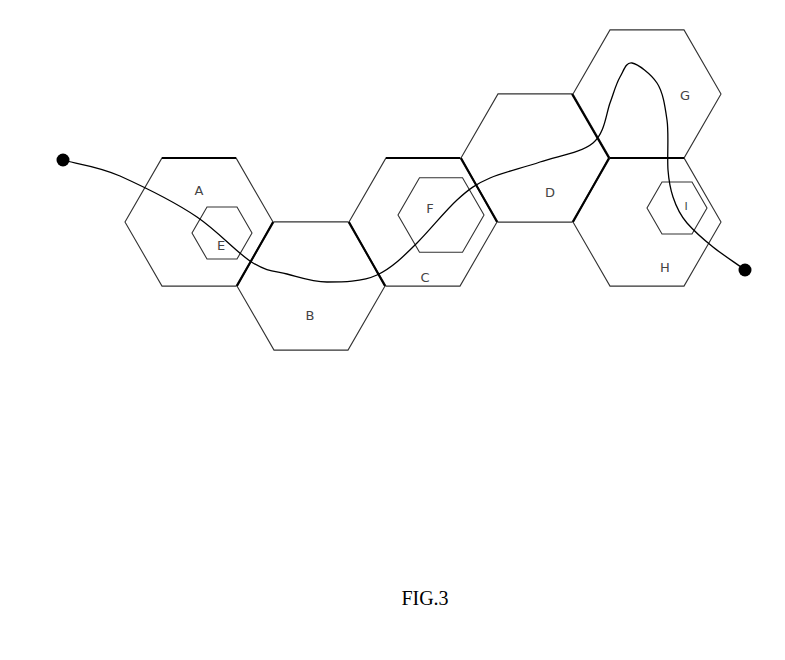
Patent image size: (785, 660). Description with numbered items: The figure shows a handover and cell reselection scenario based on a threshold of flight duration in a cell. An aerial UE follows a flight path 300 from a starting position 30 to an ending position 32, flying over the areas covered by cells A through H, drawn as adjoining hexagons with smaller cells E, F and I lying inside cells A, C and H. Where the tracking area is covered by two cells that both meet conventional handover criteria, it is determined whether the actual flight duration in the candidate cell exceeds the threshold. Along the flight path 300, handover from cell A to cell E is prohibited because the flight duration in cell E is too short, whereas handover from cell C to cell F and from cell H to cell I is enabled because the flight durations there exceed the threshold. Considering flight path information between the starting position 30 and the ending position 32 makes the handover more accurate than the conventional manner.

The starting position 30 is at (62, 143).
The flight path 300 is at (288, 262).
The ending position 32 is at (743, 287).